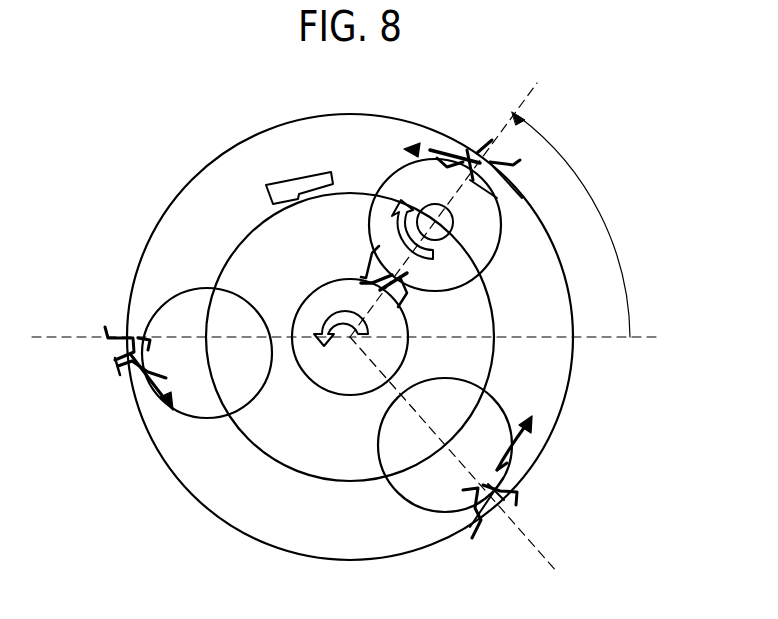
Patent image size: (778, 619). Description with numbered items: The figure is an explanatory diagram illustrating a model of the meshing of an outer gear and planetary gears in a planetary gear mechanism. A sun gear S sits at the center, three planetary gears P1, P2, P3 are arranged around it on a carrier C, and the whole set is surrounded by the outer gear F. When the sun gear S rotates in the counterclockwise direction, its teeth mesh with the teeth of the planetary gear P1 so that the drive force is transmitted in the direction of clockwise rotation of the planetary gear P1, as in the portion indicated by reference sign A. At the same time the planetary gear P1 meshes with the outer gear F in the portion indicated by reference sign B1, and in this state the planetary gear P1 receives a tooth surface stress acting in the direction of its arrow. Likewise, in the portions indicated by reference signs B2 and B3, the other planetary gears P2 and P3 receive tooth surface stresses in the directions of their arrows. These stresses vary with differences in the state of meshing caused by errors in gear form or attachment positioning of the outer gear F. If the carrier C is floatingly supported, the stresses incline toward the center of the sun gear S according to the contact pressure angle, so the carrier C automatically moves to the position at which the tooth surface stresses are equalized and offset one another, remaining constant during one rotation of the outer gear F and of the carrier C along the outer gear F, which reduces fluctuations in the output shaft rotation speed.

The outer gear F is at (222, 153).
The carrier C is at (236, 246).
The sun gear S is at (322, 397).
The planetary gear P1 is at (500, 252).
The planetary gear P2 is at (499, 402).
The planetary gear P3 is at (200, 422).
The meshing portion of planetary gear P1 and outer gear B1 is at (470, 135).
The meshing portion of planetary gear P2 and outer gear B2 is at (527, 495).
The meshing portion of planetary gear P3 and outer gear B3 is at (111, 385).
The meshing portion of sun gear and planetary gear P1 A is at (412, 297).